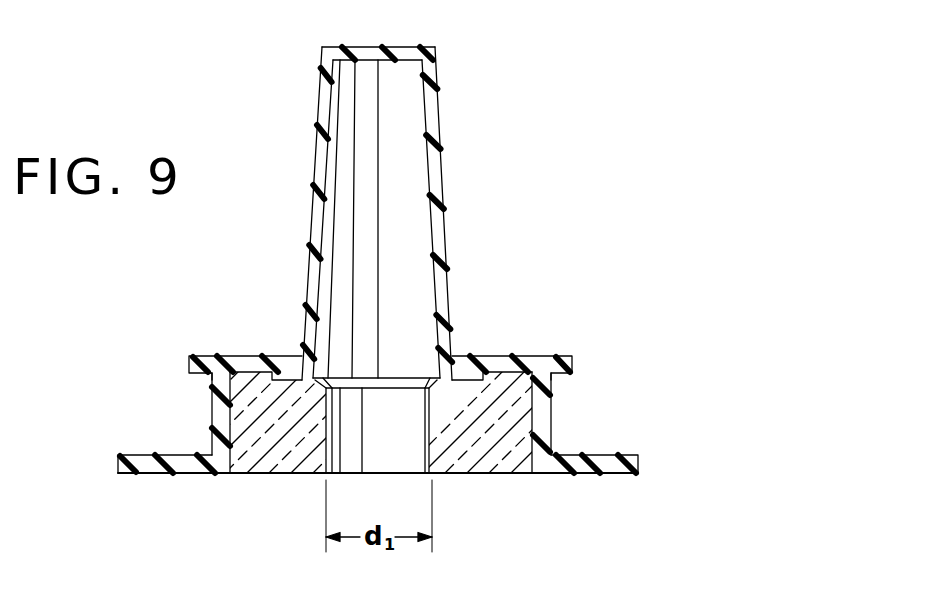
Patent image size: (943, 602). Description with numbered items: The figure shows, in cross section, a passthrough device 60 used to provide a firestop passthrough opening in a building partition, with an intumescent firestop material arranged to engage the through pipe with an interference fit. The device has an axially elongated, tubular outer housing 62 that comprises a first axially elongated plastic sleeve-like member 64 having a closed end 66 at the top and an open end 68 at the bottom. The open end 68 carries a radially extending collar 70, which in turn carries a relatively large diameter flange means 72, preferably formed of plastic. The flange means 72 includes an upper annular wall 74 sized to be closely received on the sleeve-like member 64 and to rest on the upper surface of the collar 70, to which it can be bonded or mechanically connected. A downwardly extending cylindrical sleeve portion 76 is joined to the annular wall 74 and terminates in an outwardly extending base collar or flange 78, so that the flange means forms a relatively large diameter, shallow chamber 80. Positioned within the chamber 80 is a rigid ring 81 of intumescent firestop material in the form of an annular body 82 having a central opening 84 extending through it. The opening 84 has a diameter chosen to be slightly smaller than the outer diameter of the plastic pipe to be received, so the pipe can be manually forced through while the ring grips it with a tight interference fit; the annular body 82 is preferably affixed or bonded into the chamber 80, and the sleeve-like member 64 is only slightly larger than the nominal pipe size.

The passthrough device 60 is at (520, 193).
The tubular outer housing 62 is at (285, 292).
The sleeve-like member 64 is at (441, 128).
The closed end 66 is at (432, 44).
The open end 68 is at (394, 360).
The collar 70 is at (473, 368).
The flange means 72 is at (588, 380).
The upper annular wall 74 is at (257, 360).
The cylindrical sleeve portion 76 is at (212, 402).
The base collar or flange 78 is at (143, 473).
The chamber 80 is at (500, 461).
The rigid ring 81 is at (248, 494).
The annular body 82 is at (258, 452).
The central opening 84 is at (407, 452).